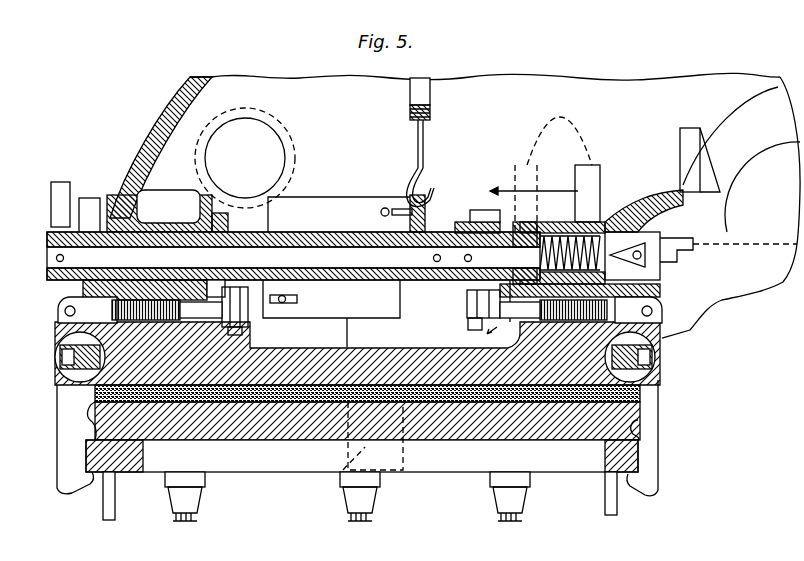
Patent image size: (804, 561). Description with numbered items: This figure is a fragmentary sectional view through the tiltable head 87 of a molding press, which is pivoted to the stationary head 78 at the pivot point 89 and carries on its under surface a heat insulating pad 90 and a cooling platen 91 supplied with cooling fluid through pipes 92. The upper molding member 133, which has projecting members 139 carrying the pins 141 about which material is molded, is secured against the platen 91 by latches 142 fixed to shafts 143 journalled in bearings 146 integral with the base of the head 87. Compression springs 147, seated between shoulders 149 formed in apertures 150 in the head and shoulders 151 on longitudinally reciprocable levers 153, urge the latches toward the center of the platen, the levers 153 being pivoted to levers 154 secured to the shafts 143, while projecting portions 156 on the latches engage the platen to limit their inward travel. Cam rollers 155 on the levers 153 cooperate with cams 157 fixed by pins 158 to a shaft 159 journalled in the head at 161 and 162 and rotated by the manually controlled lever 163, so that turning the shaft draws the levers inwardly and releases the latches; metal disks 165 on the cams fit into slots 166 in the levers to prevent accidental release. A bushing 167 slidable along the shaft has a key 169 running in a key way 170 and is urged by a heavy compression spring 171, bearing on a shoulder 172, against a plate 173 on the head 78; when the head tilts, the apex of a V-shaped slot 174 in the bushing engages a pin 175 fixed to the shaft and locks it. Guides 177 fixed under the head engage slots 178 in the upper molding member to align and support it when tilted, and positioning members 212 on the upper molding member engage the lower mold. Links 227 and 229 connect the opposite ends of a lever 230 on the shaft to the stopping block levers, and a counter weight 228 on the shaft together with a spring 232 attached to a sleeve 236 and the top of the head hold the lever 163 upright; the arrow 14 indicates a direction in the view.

The direction arrow 14 is at (531, 251).
The head 78 is at (723, 290).
The tiltable head 87 is at (176, 102).
The pivot point 89 is at (762, 152).
The heat insulating pad 90 is at (310, 397).
The cooling platen 91 is at (250, 433).
The pipes 92 is at (559, 137).
The upper molding member 133 is at (633, 458).
The projecting members 139 is at (507, 497).
The pins 141 is at (507, 513).
The latches 142 is at (93, 480).
The shafts 143 is at (58, 385).
The bearings 146 is at (54, 357).
The compression springs 147 is at (130, 300).
The shoulders 149 is at (262, 348).
The apertures 150 is at (163, 300).
The shoulders 151 is at (112, 300).
The longitudinally reciprocable levers 153 is at (203, 300).
The levers 154 is at (57, 338).
The cam rollers 155 is at (284, 303).
The projecting portions 156 is at (97, 418).
The cams 157 is at (246, 214).
The pins 158 is at (330, 246).
The shaft 159 is at (327, 243).
The journal 161 is at (100, 230).
The journal 162 is at (580, 224).
The manually controlled lever 163 is at (54, 184).
The metal disks 165 is at (190, 222).
The slots 166 is at (250, 322).
The bushing 167 is at (617, 217).
The key 169 is at (650, 191).
The key way 170 is at (683, 196).
The heavy compression spring 171 is at (582, 213).
The shoulder 172 is at (540, 262).
The plate 173 is at (687, 243).
The V-shaped slot 174 is at (642, 276).
The pin 175 is at (646, 255).
The guides 177 is at (372, 483).
The slots 178 is at (335, 474).
The positioning members 212 is at (103, 518).
The link 227 is at (423, 185).
The counter weight 228 is at (348, 343).
The link 229 is at (283, 300).
The lever 230 is at (387, 208).
The spring 232 is at (432, 113).
The sleeve 236 is at (426, 216).